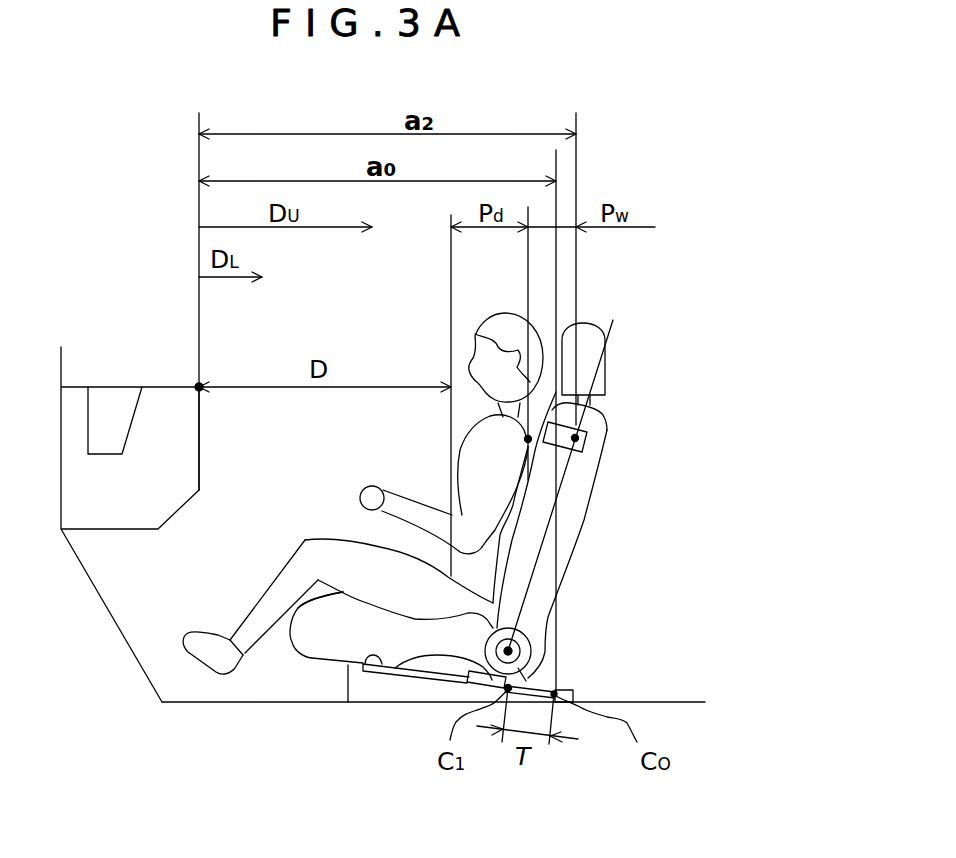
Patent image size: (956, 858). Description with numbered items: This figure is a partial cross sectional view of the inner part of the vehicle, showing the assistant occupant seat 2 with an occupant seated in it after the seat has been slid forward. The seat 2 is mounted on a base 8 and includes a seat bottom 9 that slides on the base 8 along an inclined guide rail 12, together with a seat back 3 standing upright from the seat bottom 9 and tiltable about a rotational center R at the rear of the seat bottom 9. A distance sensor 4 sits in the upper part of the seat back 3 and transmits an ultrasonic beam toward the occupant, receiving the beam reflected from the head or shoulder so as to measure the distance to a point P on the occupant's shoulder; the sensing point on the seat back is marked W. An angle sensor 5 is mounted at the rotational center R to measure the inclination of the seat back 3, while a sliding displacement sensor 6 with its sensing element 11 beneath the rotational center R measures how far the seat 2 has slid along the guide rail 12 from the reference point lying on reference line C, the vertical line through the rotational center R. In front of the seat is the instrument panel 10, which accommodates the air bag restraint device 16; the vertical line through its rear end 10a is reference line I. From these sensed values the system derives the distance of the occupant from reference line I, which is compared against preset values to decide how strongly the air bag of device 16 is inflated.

The assistant occupant seat 2 is at (637, 437).
The seat back 3 is at (542, 590).
The distance sensor 4 is at (593, 433).
The angle sensor 5 is at (527, 633).
The sliding displacement sensor 6 is at (462, 689).
The base 8 is at (343, 692).
The seat bottom 9 is at (335, 643).
The instrument panel 10 is at (170, 465).
The rear end of instrument panel 10a is at (200, 423).
The sliding displacement sensing element 11 is at (394, 675).
The guide rail 12 is at (367, 675).
The air bag restraint device 16 is at (107, 402).
The reference line I is at (199, 163).
The reference line C is at (557, 167).
The point of occupant shoulder P is at (553, 398).
The sensor point W is at (578, 447).
The rotational center R is at (520, 641).